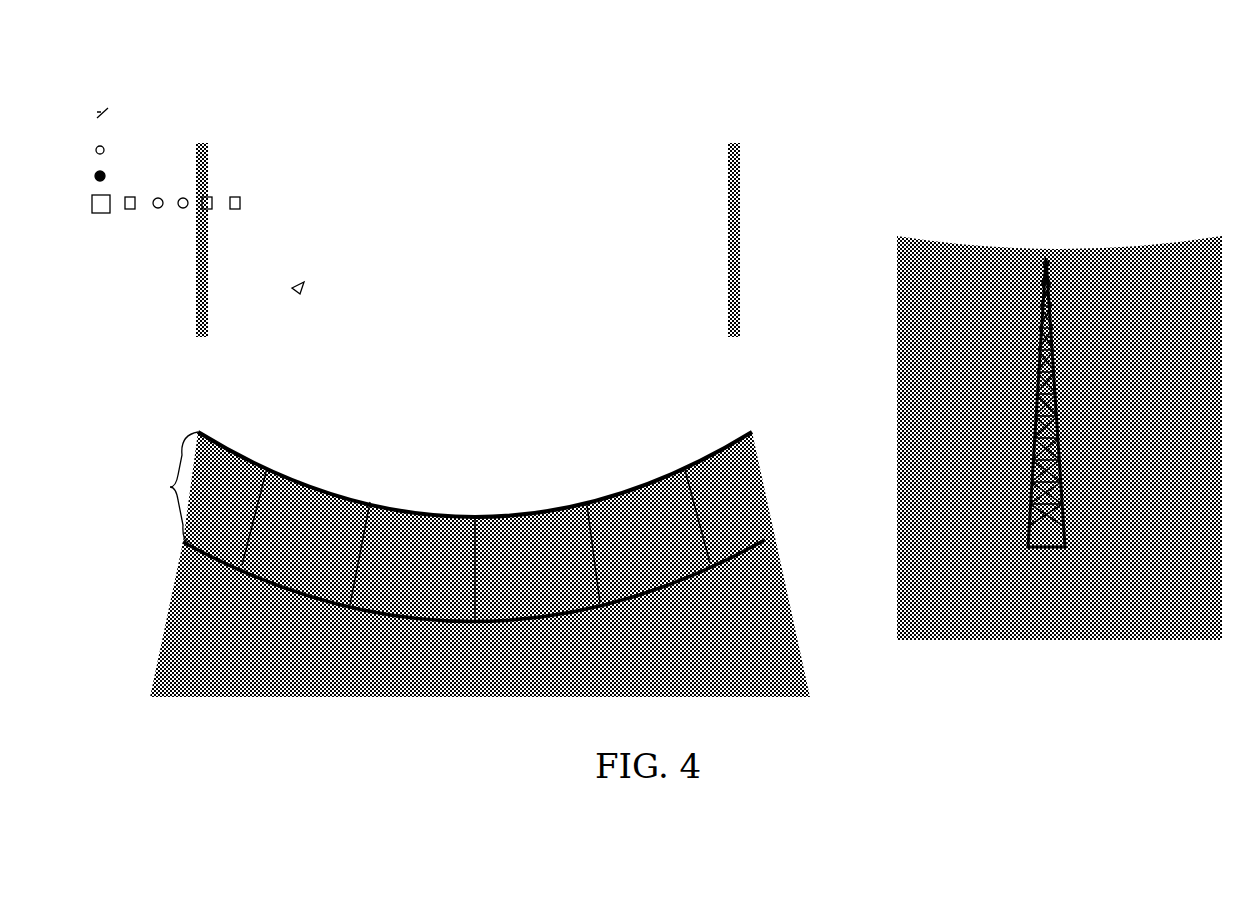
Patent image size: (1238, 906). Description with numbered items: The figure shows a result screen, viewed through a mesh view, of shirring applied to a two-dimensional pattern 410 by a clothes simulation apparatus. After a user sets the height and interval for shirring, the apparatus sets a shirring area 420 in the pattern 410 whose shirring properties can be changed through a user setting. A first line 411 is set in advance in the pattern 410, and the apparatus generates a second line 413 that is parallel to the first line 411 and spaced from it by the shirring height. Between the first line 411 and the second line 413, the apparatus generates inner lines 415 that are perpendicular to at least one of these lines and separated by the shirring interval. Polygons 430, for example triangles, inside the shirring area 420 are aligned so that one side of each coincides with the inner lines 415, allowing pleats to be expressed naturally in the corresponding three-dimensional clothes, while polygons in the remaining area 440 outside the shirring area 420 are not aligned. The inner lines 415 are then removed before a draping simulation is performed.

The 2D pattern 410 is at (452, 118).
The first line 411 is at (710, 452).
The second line 413 is at (733, 558).
The inner lines 415 is at (477, 518).
The shirring area 420 is at (160, 487).
The polygons 430 is at (1050, 257).
The remaining area 440 is at (1110, 598).